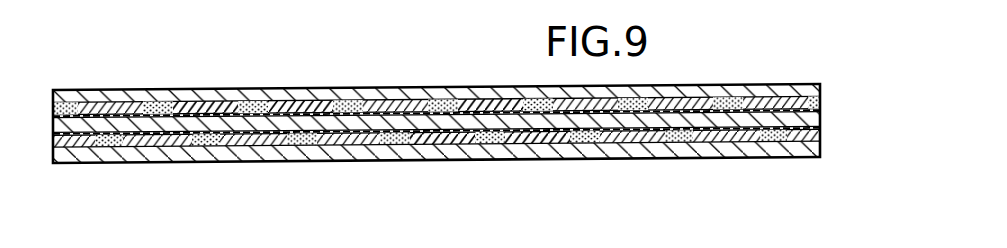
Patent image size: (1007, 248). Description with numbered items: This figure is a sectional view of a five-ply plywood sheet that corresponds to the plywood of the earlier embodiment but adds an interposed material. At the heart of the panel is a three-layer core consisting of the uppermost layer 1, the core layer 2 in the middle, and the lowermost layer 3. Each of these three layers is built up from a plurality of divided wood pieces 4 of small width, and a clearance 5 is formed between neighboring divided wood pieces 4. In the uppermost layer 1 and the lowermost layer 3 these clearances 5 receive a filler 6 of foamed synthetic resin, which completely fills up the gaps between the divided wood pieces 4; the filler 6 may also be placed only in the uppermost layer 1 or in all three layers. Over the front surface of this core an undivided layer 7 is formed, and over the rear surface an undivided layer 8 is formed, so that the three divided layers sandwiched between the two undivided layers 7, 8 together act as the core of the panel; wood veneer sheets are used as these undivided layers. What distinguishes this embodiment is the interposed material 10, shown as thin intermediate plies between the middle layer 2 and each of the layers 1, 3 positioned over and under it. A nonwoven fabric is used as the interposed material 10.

The uppermost layer 1 is at (828, 91).
The core layer 2 is at (830, 115).
The lowermost layer 3 is at (831, 143).
The divided wood pieces 4 is at (215, 101).
The clearance 5 is at (239, 98).
The filler 6 is at (157, 101).
The undivided layer 7 is at (757, 86).
The undivided layer 8 is at (775, 158).
The interposed material 10 is at (687, 111).